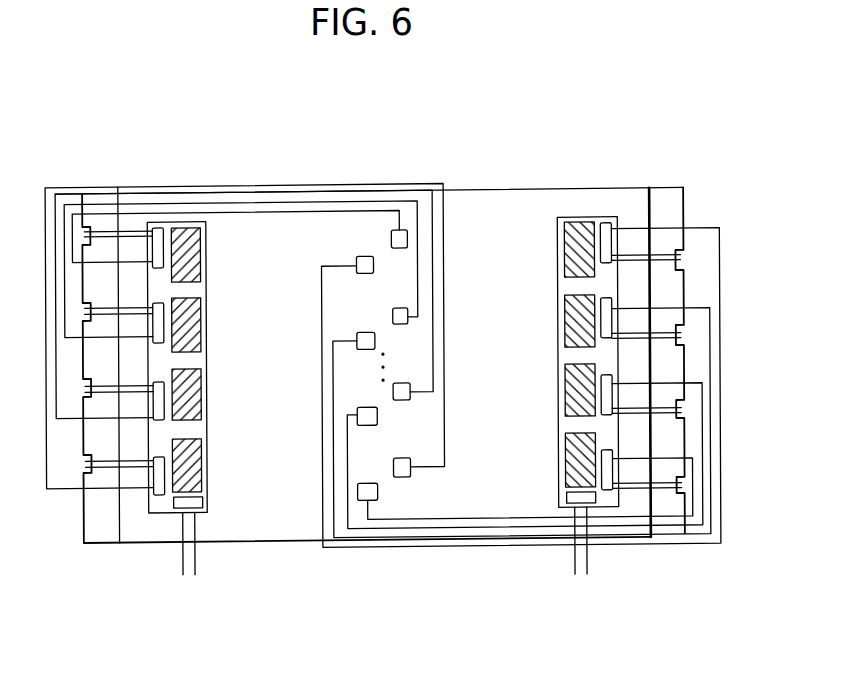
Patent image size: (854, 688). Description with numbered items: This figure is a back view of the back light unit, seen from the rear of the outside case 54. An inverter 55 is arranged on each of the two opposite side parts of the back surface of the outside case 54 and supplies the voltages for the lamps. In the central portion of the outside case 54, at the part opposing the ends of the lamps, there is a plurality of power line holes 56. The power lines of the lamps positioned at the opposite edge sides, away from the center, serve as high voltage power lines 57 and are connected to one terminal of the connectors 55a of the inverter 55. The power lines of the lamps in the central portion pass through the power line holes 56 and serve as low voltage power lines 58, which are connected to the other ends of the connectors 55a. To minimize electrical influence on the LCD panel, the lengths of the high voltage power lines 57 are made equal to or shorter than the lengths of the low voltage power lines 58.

The outside case 54 is at (511, 191).
The inverter 55 is at (207, 280).
The connector 55a is at (159, 226).
The power line hole 56 is at (362, 407).
The high voltage power line 57 is at (109, 228).
The low voltage power line 58 is at (702, 231).